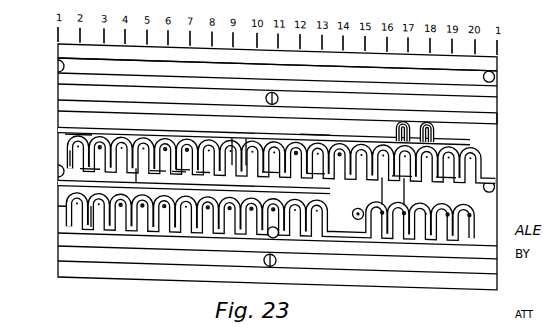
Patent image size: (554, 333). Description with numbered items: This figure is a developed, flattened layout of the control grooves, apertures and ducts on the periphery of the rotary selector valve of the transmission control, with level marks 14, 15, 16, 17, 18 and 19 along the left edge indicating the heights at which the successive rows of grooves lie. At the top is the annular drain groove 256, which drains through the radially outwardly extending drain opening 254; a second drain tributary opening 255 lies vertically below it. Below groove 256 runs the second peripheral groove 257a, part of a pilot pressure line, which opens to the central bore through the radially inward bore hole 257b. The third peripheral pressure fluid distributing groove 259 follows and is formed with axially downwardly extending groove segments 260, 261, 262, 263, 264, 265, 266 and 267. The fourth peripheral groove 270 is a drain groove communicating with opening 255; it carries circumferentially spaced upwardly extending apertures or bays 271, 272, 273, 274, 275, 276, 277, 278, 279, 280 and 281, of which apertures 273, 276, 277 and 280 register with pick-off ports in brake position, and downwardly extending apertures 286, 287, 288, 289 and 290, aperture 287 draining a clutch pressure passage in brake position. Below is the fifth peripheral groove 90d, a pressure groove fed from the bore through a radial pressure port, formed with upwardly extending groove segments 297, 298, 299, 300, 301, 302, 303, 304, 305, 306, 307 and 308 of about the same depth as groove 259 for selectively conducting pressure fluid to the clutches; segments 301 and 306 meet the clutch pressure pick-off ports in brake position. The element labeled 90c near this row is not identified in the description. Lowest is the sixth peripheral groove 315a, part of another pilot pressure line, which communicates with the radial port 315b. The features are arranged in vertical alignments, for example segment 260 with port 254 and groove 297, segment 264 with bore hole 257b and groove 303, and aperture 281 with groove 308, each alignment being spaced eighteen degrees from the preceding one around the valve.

The conductor row 14 is at (50, 67).
The conductor row 15 is at (50, 92).
The conductor row 16 is at (50, 122).
The conductor row 17 is at (50, 170).
The conductor row 18 is at (50, 227).
The conductor row 19 is at (50, 252).
The drain opening 254 is at (495, 64).
The drain tributary opening 255 is at (495, 172).
The annular drain groove 256 is at (132, 64).
The second peripheral groove 257a is at (322, 86).
The bore hole 257b is at (266, 93).
The third peripheral pressure fluid distributing groove 259 is at (470, 128).
The groove segment 260 is at (64, 132).
The groove segment 261 is at (78, 125).
The groove segment 262 is at (178, 134).
The groove segment 263 is at (199, 135).
The groove segment 264 is at (277, 124).
The groove segment 265 is at (326, 123).
The groove segment 266 is at (396, 127).
The groove segment 267 is at (436, 127).
The fourth peripheral groove 270 is at (406, 181).
The aperture 271 is at (68, 159).
The aperture 272 is at (106, 134).
The aperture 273 is at (138, 167).
The aperture 274 is at (181, 162).
The aperture 275 is at (201, 177).
The aperture 276 is at (241, 142).
The aperture 277 is at (271, 165).
The aperture 278 is at (317, 165).
The aperture 279 is at (322, 128).
The aperture 280 is at (403, 169).
The aperture 281 is at (446, 170).
The aperture 286 is at (90, 175).
The aperture 287 is at (119, 211).
The aperture 288 is at (155, 176).
The aperture 289 is at (177, 176).
The aperture 290 is at (381, 191).
The groove segment 297 is at (58, 195).
The groove segment 298 is at (64, 207).
The groove segment 299 is at (96, 217).
The groove segment 300 is at (173, 221).
The groove segment 301 is at (219, 219).
The groove segment 302 is at (238, 191).
The groove segment 303 is at (266, 192).
The groove segment 304 is at (295, 192).
The groove segment 305 is at (353, 218).
The groove segment 306 is at (394, 219).
The groove segment 307 is at (441, 220).
The groove segment 308 is at (466, 220).
The sixth peripheral groove 315a is at (340, 246).
The radial port 315b is at (264, 254).
The pad 90c is at (286, 231).
The fifth peripheral groove 90d is at (143, 220).